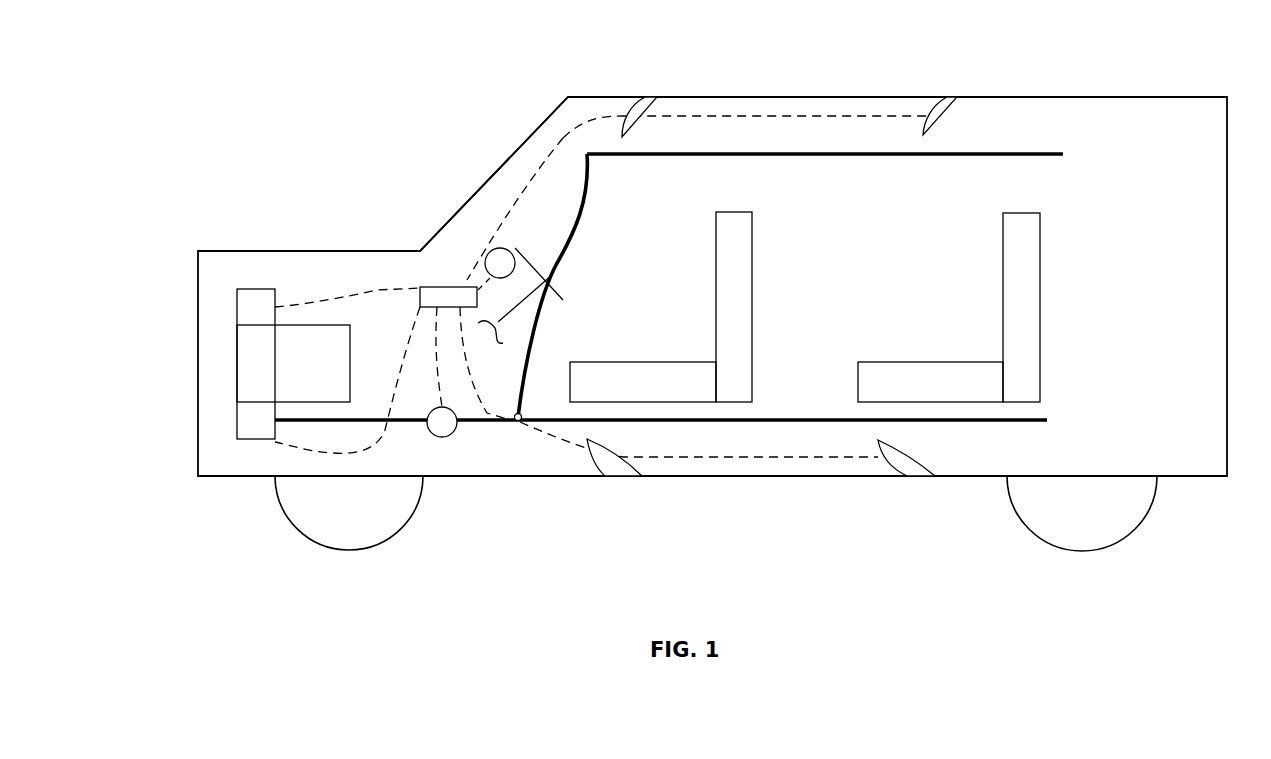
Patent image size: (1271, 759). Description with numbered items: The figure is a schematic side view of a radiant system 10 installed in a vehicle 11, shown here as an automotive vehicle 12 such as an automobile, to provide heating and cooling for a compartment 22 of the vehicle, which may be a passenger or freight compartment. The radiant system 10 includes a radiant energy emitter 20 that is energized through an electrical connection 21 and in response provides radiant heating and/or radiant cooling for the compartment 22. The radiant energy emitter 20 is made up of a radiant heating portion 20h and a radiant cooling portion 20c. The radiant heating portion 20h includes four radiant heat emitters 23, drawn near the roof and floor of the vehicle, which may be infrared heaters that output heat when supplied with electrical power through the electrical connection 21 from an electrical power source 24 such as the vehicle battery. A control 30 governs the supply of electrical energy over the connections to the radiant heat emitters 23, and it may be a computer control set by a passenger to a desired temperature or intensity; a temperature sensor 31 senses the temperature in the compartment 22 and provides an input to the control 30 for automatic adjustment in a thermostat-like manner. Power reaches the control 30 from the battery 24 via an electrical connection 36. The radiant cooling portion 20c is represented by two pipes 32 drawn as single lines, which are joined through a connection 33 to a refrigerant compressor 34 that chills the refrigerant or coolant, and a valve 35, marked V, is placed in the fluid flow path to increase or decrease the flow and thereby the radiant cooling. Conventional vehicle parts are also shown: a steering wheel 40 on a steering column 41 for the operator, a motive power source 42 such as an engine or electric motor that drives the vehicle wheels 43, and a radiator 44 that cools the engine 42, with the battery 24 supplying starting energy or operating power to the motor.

The radiant system 10 is at (526, 158).
The vehicle 11 is at (527, 106).
The automotive vehicle 12 is at (585, 97).
The radiant energy emitter 20 is at (722, 88).
The radiant heating portion 20h is at (980, 120).
The radiant cooling portion 20c is at (1087, 148).
The electrical connection 21 is at (505, 212).
The compartment 22 is at (486, 220).
The radiant heat emitters 23 is at (648, 100).
The electrical power source 24 is at (250, 288).
The control 30 is at (430, 287).
The temperature sensor 31 is at (507, 247).
The pipes 32 is at (630, 157).
The connection 33 is at (512, 423).
The refrigerant compressor 34 is at (240, 436).
The valve 35 is at (437, 436).
The electrical connection 36 is at (310, 305).
The steering wheel 40 is at (548, 287).
The steering column 41 is at (520, 298).
The motive power source 42 is at (332, 365).
The vehicle wheels 43 is at (373, 550).
The radiator 44 is at (237, 353).